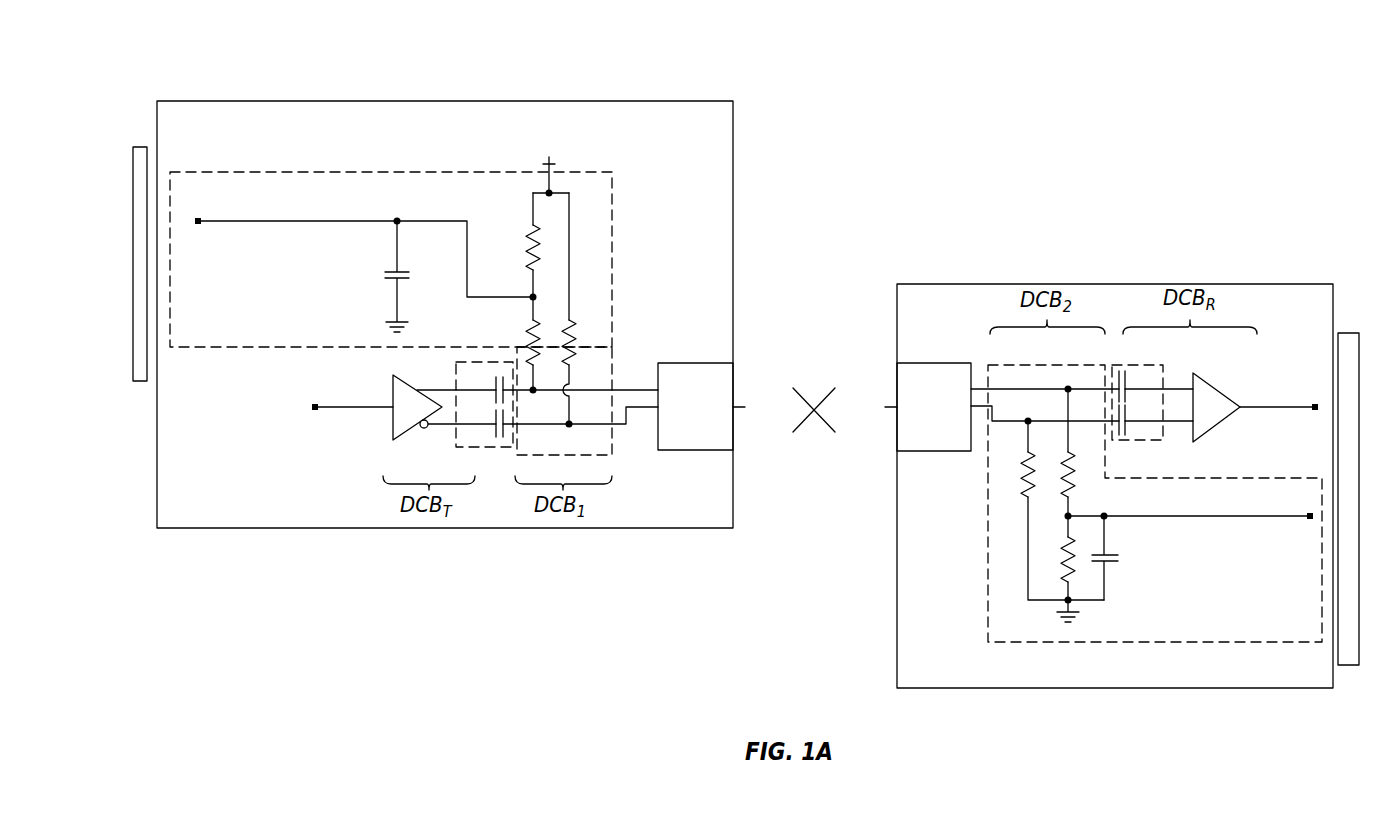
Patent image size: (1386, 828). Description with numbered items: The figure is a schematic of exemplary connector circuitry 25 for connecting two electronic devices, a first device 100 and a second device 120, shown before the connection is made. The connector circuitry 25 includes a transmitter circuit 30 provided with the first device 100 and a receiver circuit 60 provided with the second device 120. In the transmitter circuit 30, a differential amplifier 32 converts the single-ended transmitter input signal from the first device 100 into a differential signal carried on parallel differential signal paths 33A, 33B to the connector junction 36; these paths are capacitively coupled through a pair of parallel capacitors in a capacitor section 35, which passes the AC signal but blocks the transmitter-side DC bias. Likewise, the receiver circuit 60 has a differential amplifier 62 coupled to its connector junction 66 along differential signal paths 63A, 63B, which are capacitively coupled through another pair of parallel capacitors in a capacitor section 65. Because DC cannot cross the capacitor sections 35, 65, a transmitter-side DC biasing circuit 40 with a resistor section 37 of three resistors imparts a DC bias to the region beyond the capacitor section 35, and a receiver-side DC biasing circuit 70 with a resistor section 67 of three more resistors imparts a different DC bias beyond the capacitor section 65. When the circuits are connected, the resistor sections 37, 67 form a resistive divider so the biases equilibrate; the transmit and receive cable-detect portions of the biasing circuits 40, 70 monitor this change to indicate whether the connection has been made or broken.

The connector circuitry 25 is at (1043, 106).
The transmitter circuit 30 is at (443, 101).
The differential amplifier 32 is at (393, 425).
The differential signal path 33A is at (458, 388).
The differential signal path 33B is at (447, 428).
The capacitor section 35 is at (490, 362).
The connector junction 36 is at (690, 452).
The resistor section 37 is at (596, 196).
The transmitter-side DC biasing circuit 40 is at (258, 172).
The receiver circuit 60 is at (1110, 284).
The differential amplifier 62 is at (1222, 424).
The differential signal path 63A is at (1012, 365).
The differential signal path 63B is at (992, 444).
The capacitor section 65 is at (1115, 440).
The connector junction 66 is at (935, 363).
The resistor section 67 is at (1011, 559).
The receiver-side DC biasing circuit 70 is at (1172, 643).
The first device 100 is at (140, 147).
The second device 120 is at (1348, 333).